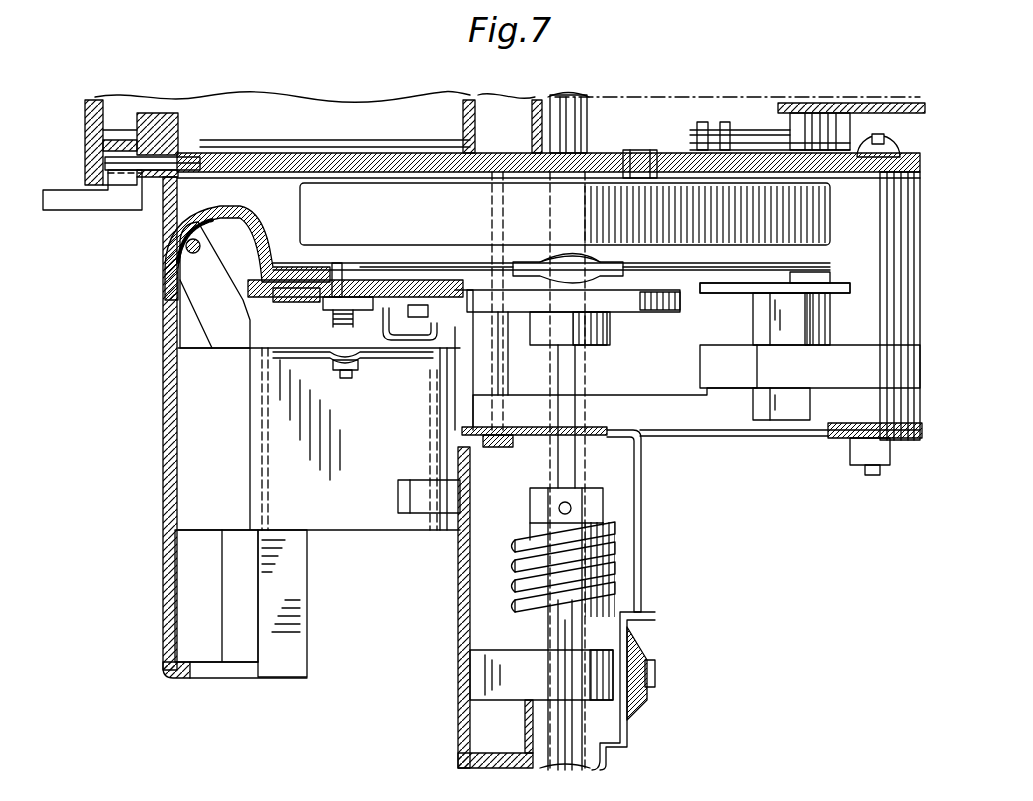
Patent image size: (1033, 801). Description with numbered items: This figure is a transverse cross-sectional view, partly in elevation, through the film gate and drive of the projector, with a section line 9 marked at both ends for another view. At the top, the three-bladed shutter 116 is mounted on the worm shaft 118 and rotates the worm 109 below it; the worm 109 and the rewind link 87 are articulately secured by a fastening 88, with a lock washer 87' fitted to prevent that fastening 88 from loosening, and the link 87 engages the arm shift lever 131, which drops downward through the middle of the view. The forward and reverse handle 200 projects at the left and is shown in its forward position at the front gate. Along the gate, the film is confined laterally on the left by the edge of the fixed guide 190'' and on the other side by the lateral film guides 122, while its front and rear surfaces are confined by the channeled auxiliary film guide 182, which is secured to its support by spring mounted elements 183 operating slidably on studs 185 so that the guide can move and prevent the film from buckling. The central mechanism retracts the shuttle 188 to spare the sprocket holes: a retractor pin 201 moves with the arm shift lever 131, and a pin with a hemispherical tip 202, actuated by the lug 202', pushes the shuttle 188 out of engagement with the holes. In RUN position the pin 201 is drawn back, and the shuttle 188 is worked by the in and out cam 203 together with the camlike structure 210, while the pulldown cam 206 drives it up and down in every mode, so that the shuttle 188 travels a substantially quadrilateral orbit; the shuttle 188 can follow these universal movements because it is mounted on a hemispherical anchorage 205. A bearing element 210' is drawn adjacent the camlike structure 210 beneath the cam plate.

The section line 9 is at (52, 187).
The forward and reverse handle 200 is at (92, 203).
The worm shaft 118 is at (575, 96).
The three-bladed shutter 116 is at (467, 236).
The shuttle 188 is at (335, 270).
The pulldown cam 206 is at (574, 258).
The pin with hemispherical tip 202 is at (595, 245).
The in and out cam 203 is at (572, 291).
The camlike structure 210 is at (665, 316).
The bearing 210' is at (624, 343).
The retractor pin 201 is at (503, 335).
The hemispherical anchorage 205 is at (760, 291).
The fixed guide 190'' is at (282, 305).
The auxiliary film guide 182 is at (340, 312).
The spring mounted elements 183 is at (338, 338).
The studs 185 is at (355, 370).
The lateral film guides 122 is at (385, 316).
The lug 202' is at (501, 459).
The arm shift lever 131 is at (642, 484).
The worm 109 is at (610, 550).
The lock washer 87' is at (669, 664).
The fastening 88 is at (657, 682).
The rewind link 87 is at (629, 691).